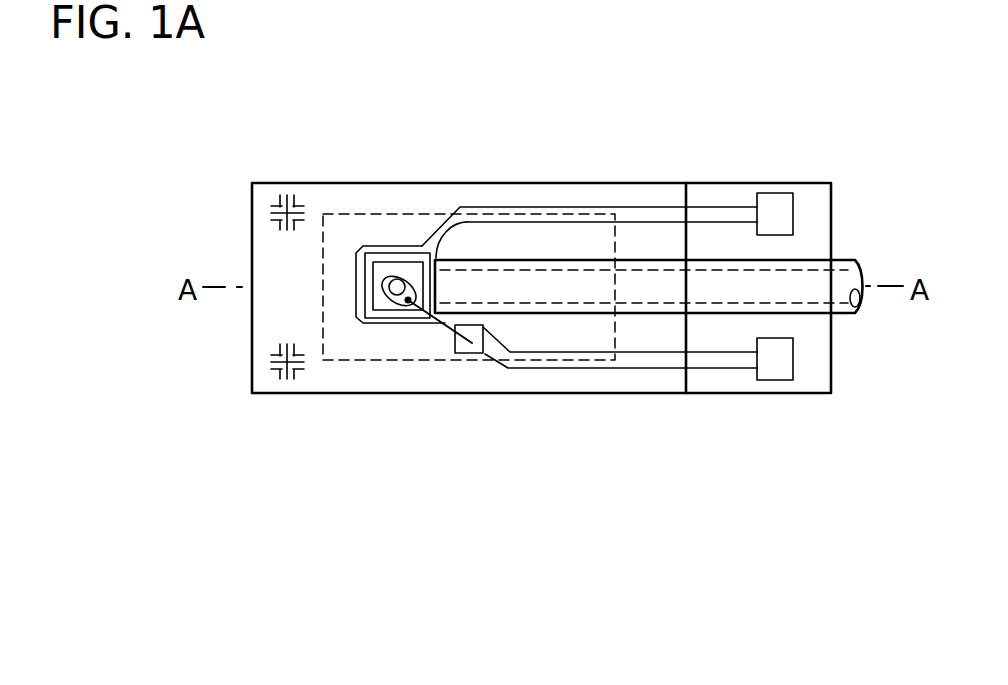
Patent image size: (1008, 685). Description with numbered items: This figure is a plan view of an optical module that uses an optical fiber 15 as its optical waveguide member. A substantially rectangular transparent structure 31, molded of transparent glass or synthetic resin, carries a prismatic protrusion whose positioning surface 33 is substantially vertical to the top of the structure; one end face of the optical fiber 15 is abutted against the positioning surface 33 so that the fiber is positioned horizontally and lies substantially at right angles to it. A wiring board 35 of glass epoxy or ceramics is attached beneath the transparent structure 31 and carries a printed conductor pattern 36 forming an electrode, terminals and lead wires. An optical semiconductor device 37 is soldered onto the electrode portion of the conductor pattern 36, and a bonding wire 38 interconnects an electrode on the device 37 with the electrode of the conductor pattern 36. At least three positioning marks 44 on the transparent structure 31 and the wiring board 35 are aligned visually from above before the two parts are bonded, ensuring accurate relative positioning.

The optical fiber 15 is at (838, 278).
The transparent structure 31 is at (559, 382).
The positioning surface 33 is at (472, 223).
The wiring board 35 is at (812, 383).
The conductor pattern 36 is at (655, 215).
The optical semiconductor device 37 is at (380, 303).
The bonding wire 38 is at (445, 327).
The positioning marks 44 is at (280, 207).